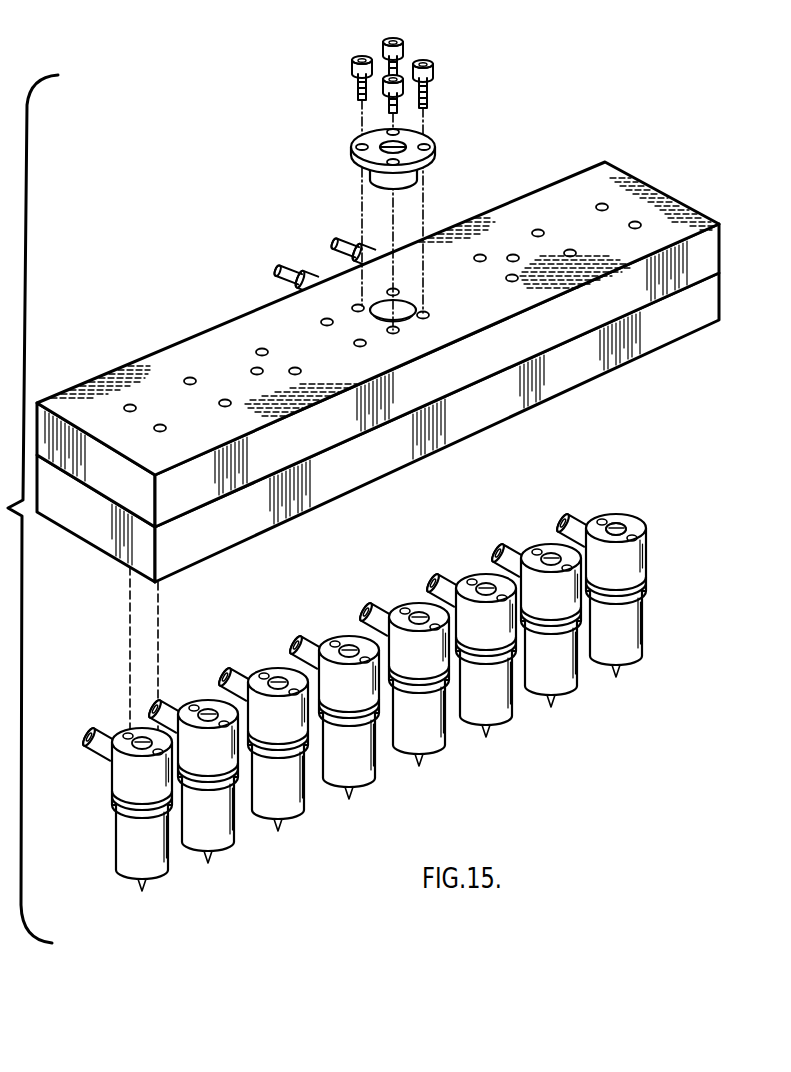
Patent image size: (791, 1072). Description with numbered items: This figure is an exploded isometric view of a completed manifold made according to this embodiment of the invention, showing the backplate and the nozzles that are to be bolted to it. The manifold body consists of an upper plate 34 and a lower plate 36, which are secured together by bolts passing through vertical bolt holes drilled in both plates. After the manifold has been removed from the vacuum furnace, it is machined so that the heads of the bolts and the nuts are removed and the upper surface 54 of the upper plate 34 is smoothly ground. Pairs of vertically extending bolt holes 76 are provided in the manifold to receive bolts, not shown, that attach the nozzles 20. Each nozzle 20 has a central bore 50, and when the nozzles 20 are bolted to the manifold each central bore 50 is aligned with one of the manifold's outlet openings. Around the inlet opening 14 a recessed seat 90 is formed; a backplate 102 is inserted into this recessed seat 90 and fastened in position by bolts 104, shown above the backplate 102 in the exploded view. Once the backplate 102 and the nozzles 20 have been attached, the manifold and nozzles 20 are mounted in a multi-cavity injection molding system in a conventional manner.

The inlet opening 14 is at (403, 272).
The nozzles 20 is at (618, 575).
The upper plate 34 is at (383, 327).
The lower plate 36 is at (669, 325).
The central bore 50 is at (618, 526).
The upper surface 54 is at (500, 212).
The bolt holes 76 is at (602, 204).
The recessed seat 90 is at (413, 306).
The backplate 102 is at (425, 137).
The bolts 104 is at (433, 69).